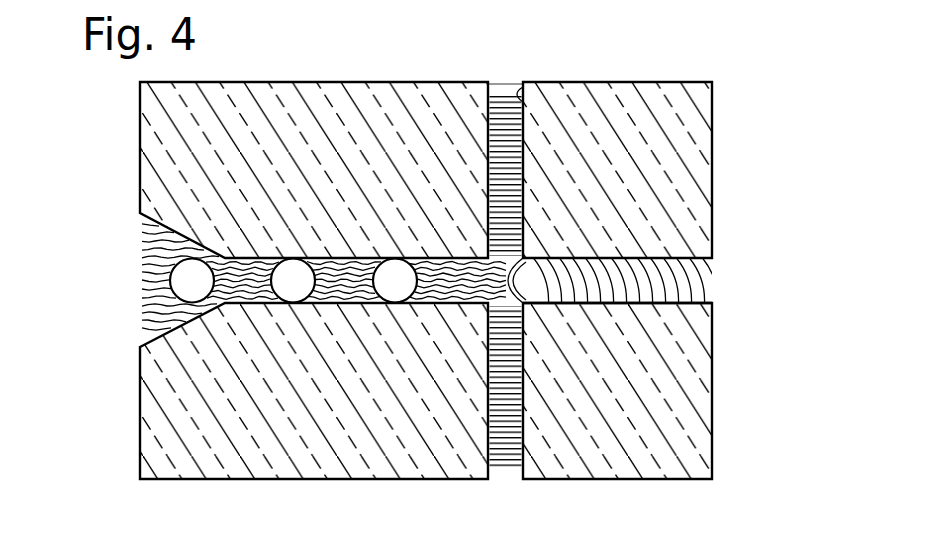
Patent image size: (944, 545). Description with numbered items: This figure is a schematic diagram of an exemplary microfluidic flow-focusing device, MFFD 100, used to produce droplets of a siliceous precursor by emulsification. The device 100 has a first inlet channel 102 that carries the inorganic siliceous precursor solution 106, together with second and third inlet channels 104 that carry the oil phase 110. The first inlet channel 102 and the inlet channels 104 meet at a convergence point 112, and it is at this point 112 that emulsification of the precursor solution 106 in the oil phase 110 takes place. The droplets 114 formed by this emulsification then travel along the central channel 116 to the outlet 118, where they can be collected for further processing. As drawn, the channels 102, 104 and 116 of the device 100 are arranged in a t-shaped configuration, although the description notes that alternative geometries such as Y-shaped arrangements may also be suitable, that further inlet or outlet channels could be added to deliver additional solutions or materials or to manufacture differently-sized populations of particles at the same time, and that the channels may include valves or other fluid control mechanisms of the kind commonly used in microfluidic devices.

The microfluidic device 100 is at (421, 267).
The first inlet channel 102 is at (666, 297).
The second and third inlet channels 104 is at (516, 88).
The inorganic siliceous precursor solution 106 is at (708, 276).
The oil phase 110 is at (500, 84).
The convergence point 112 is at (492, 272).
The droplets 114 is at (394, 274).
The central channel 116 is at (337, 297).
The outlet 118 is at (122, 277).